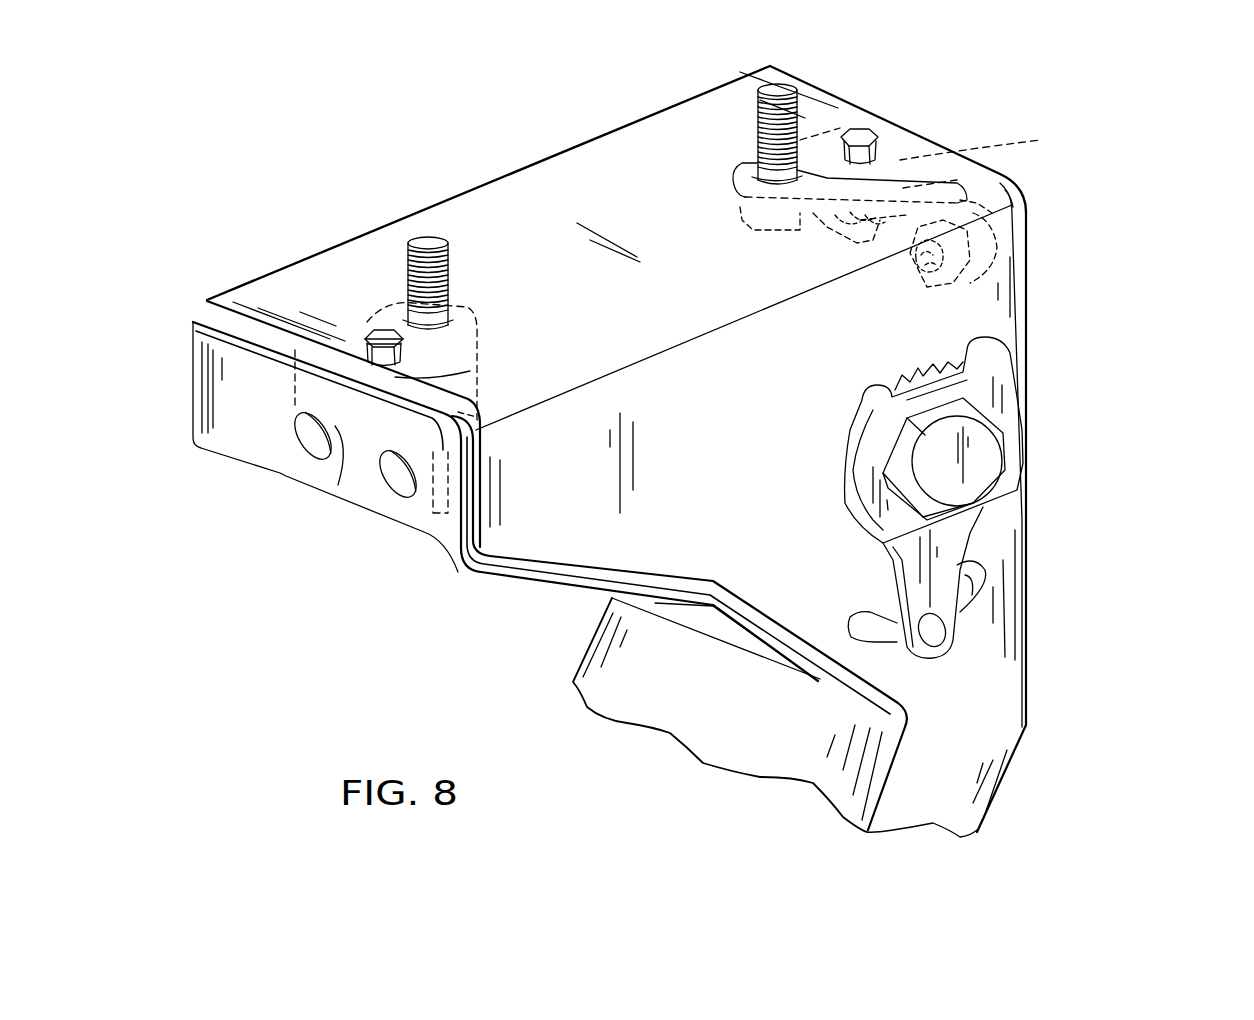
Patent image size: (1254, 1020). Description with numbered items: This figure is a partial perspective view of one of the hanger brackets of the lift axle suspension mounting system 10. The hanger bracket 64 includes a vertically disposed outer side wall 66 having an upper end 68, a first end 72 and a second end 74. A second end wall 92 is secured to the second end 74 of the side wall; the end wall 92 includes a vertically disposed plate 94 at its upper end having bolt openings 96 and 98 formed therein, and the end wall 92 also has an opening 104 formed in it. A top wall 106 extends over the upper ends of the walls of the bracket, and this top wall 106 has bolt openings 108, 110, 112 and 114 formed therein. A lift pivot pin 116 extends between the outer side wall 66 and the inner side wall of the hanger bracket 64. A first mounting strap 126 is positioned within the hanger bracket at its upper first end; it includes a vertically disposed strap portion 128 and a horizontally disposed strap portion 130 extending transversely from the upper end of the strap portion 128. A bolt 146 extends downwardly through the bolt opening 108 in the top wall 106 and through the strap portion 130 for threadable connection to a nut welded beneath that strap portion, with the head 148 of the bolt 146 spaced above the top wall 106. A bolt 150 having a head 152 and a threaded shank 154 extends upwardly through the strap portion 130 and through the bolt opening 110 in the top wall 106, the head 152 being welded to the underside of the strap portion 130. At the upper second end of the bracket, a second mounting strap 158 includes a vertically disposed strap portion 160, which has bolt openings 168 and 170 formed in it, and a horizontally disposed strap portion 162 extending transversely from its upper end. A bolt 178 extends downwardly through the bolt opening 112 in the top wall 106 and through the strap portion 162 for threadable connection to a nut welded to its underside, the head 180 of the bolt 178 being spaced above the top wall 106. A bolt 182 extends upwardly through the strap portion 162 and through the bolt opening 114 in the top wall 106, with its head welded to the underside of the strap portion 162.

The lift axle suspension mounting system 10 is at (1124, 368).
The hanger bracket 64 is at (945, 126).
The outer side wall 66 is at (570, 533).
The upper end 68 is at (753, 317).
The first end 72 is at (1028, 593).
The second end 74 is at (762, 613).
The second end wall 92 is at (567, 593).
The vertically disposed plate 94 is at (473, 503).
The bolt opening 96 is at (386, 507).
The bolt opening 98 is at (298, 466).
The opening 104 is at (735, 610).
The top wall 106 is at (522, 182).
The bolt opening 108 is at (955, 188).
The bolt opening 110 is at (735, 170).
The bolt opening 112 is at (477, 370).
The bolt opening 114 is at (470, 318).
The lift pivot pin 116 is at (973, 473).
The first mounting strap 126 is at (993, 195).
The vertically disposed strap portion 128 is at (1000, 242).
The horizontally disposed strap portion 130 is at (1040, 140).
The bolt 146 is at (883, 150).
The head 148 is at (859, 128).
The bolt 150 is at (757, 105).
The head 152 is at (767, 230).
The threaded shank 154 is at (757, 137).
The second mounting strap 158 is at (357, 338).
The vertically disposed strap portion 160 is at (373, 480).
The horizontally disposed strap portion 162 is at (440, 353).
The bolt opening 168 is at (473, 455).
The bolt opening 170 is at (355, 455).
The bolt 178 is at (383, 345).
The head 180 is at (368, 361).
The bolt 182 is at (452, 275).